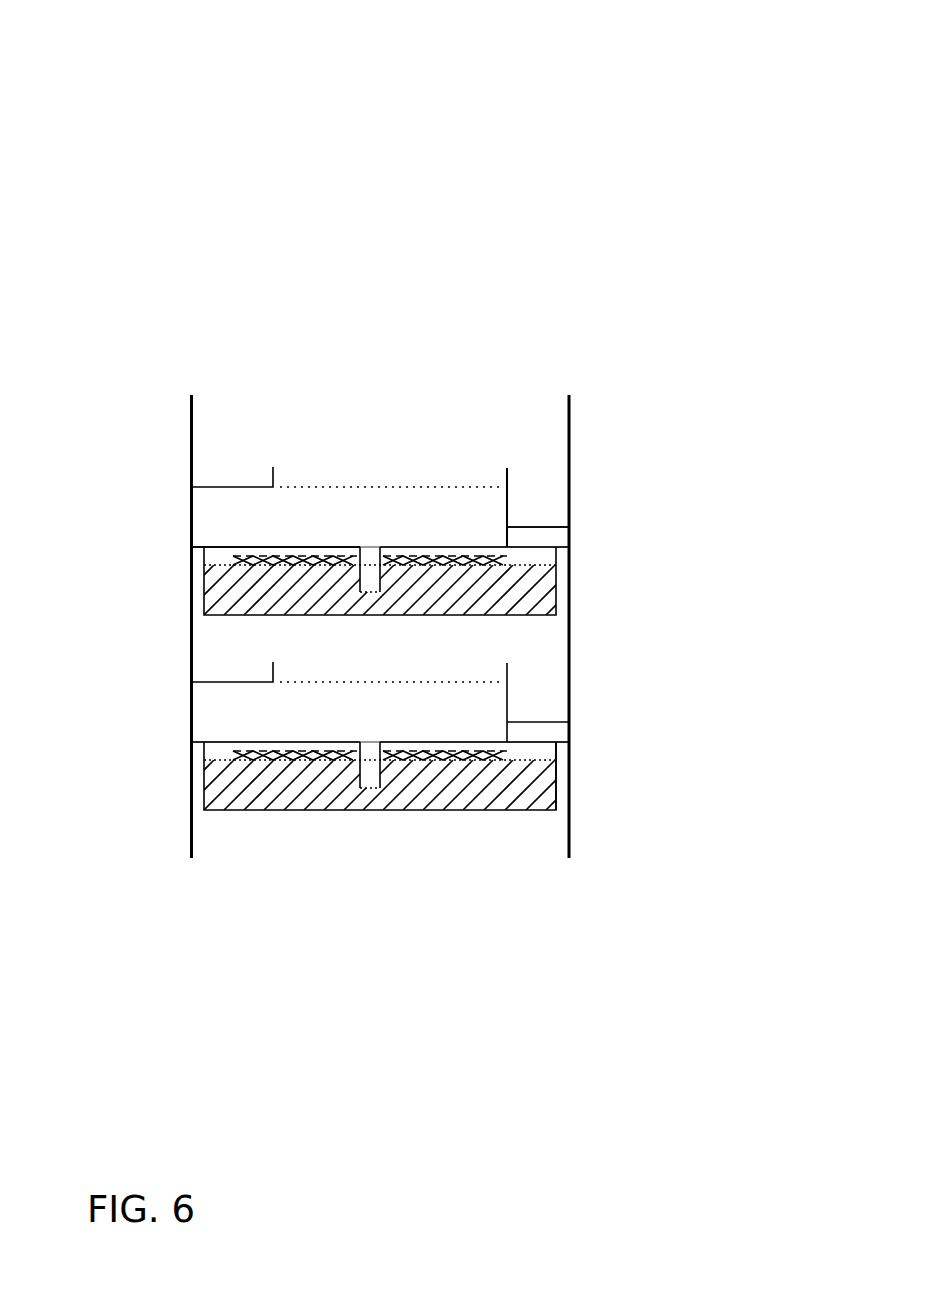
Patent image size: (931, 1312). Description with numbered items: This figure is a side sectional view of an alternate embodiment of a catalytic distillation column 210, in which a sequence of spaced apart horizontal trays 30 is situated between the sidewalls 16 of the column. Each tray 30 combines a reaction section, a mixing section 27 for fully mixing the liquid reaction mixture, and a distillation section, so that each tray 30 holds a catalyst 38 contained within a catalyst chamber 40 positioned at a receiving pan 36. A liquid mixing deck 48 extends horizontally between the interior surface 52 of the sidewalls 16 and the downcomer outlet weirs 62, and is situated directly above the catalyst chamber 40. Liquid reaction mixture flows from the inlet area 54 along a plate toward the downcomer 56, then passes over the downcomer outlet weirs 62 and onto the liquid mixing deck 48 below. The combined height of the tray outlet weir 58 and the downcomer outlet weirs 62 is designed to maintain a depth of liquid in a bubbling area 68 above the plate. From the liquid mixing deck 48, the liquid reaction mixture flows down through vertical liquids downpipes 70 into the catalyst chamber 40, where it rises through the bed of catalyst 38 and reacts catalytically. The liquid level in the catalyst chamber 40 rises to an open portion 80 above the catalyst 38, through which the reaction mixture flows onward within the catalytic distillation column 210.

The catalytic distillation column 210 is at (436, 558).
The liquid mixing deck 48 is at (222, 543).
The inlet area 54 is at (243, 462).
The mixing section 27 is at (313, 543).
The vertical liquids downpipes 70 is at (370, 545).
The bubbling area 68 is at (390, 462).
The tray outlet weir 58 is at (495, 462).
The downcomer 56 is at (515, 480).
The downcomer outlet weirs 62 is at (536, 520).
The sidewalls 16 is at (578, 480).
The tray 30 is at (489, 684).
The open portion 80 is at (277, 763).
The receiving pan 36 is at (265, 815).
The catalyst 38 is at (327, 793).
The catalyst chamber 40 is at (463, 777).
The interior surface 52 is at (558, 837).